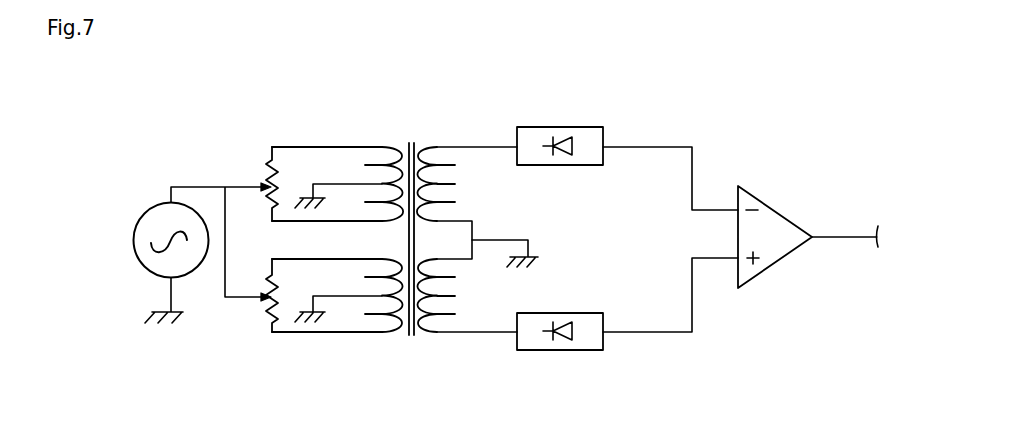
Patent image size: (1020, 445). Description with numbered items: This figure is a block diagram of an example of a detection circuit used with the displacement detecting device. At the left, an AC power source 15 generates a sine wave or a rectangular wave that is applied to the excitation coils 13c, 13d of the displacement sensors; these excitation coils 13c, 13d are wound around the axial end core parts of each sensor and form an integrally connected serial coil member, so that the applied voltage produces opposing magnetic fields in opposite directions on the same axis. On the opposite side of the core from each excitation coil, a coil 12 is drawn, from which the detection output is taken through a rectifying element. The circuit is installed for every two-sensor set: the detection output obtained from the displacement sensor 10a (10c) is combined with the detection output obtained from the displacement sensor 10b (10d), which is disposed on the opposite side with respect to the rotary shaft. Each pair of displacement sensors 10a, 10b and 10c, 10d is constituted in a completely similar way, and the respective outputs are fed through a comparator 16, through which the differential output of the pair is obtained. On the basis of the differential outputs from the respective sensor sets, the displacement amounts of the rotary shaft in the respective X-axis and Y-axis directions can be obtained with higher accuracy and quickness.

The displacement sensor 10a is at (279, 141).
The displacement sensor 10c is at (279, 141).
The displacement sensor 10b is at (289, 334).
The displacement sensor 10d is at (289, 334).
The excitation coil 13c is at (383, 146).
The excitation coil 13d is at (385, 334).
The secondary coils 12 is at (438, 146).
The AC power source 15 is at (144, 215).
The comparator 16 is at (775, 263).